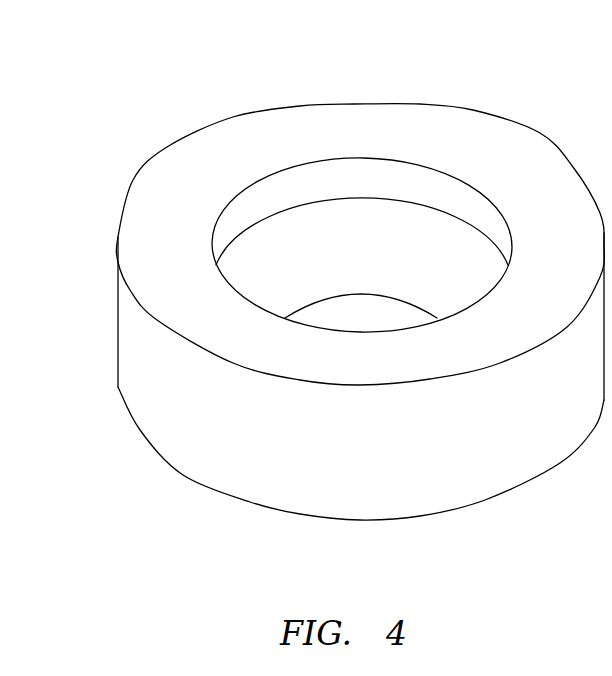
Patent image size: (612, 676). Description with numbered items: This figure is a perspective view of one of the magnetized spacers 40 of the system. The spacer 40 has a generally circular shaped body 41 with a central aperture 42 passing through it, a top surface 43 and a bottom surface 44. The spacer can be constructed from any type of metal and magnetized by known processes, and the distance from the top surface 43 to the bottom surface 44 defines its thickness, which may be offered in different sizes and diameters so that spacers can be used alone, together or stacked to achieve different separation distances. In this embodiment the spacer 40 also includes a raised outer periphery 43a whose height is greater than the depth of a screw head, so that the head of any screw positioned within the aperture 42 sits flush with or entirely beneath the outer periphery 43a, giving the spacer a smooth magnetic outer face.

The magnetized spacer 40 is at (311, 292).
The circular shaped body 41 is at (130, 340).
The central aperture 42 is at (362, 297).
The top surface 43 is at (495, 163).
The raised outer periphery 43a is at (320, 182).
The bottom surface 44 is at (182, 475).